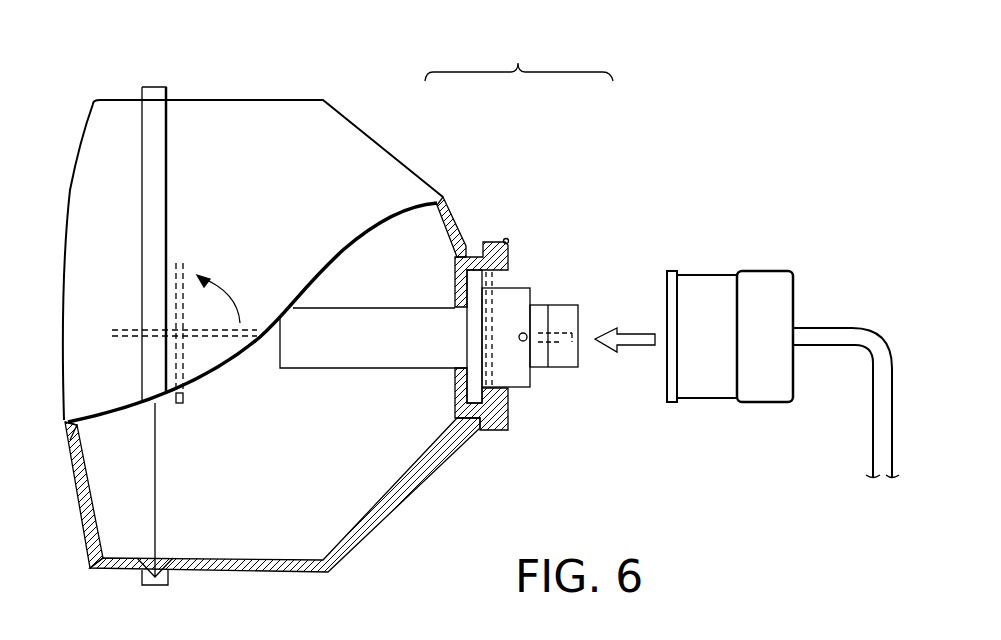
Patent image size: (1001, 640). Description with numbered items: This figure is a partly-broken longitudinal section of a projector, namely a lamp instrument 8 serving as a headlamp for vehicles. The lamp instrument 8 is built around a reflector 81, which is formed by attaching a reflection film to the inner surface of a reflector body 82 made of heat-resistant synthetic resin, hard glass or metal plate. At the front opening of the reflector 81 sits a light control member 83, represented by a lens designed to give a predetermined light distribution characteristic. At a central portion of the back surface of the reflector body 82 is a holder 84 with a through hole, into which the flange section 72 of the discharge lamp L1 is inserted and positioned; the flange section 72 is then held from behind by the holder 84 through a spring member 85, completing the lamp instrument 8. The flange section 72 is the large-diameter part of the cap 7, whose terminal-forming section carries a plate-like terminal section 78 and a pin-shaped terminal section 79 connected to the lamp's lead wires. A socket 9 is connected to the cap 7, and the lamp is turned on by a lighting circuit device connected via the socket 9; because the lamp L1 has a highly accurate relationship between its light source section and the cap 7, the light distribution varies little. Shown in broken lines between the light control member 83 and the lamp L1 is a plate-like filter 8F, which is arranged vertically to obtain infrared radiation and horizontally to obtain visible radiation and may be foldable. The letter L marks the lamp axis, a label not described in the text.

The lamp instrument 8 is at (233, 92).
The reflector 81 is at (336, 121).
The reflector body 82 is at (260, 553).
The light control member 83 is at (75, 163).
The plate-like filter 8F is at (132, 327).
The flange section 72 is at (478, 242).
The cap 7 is at (535, 288).
The plate-like terminal section 78 is at (540, 367).
The pin-shaped terminal section 79 is at (575, 346).
The holder 84 is at (493, 431).
The spring member 85 is at (485, 358).
The socket 9 is at (758, 260).
The optical axis L is at (400, 308).
The discharge lamp L1 is at (536, 57).